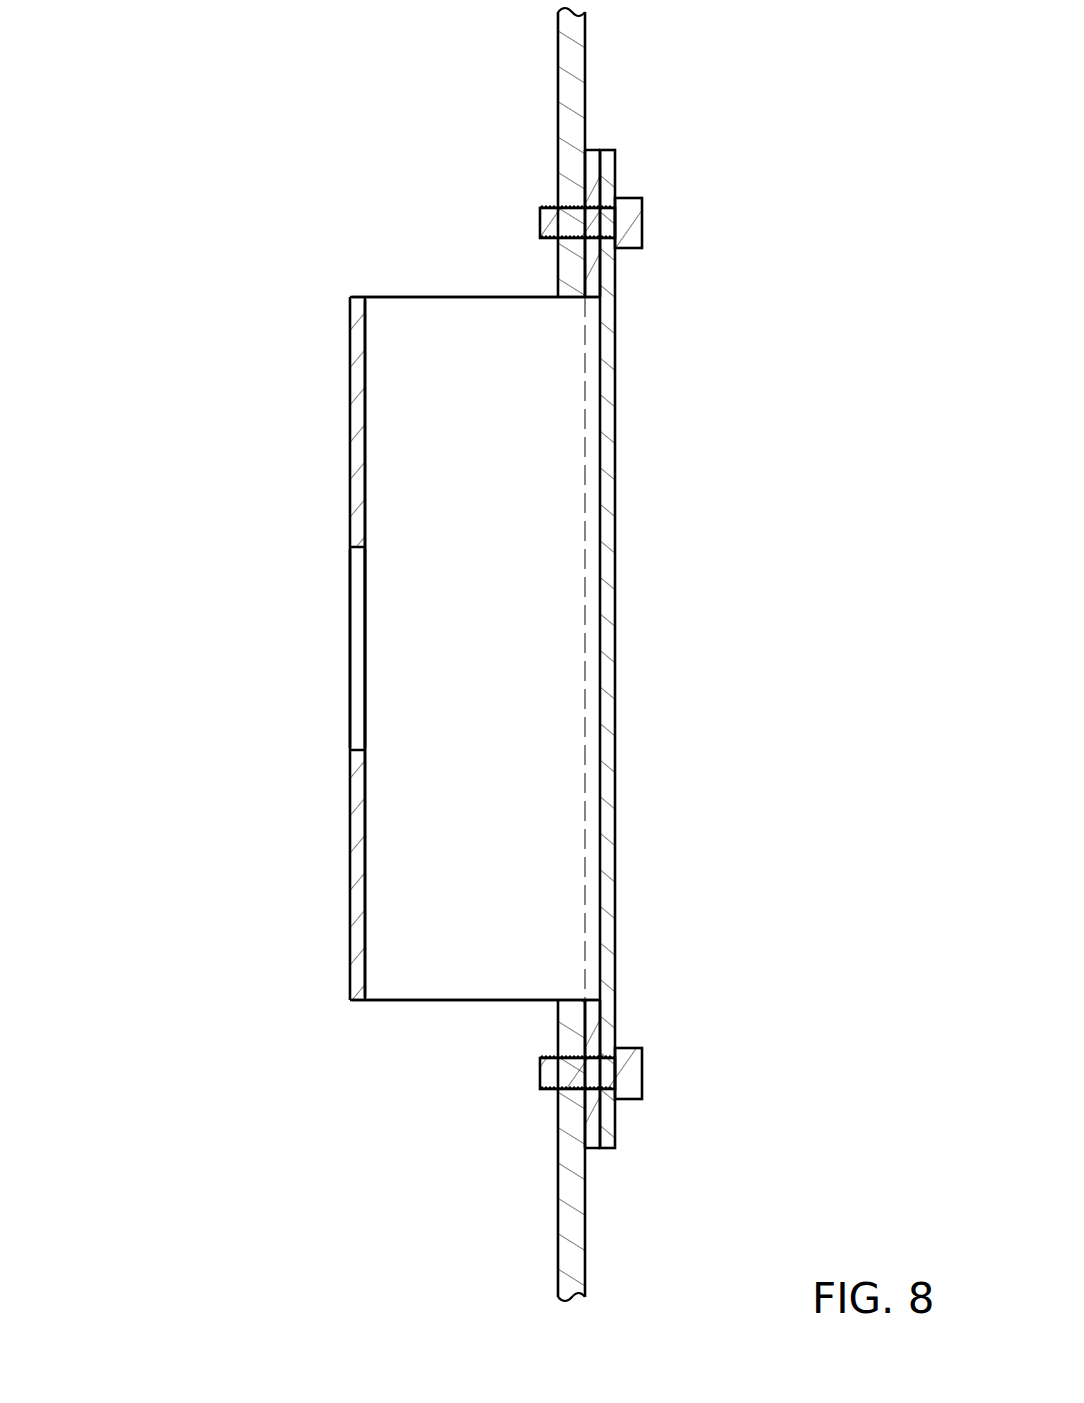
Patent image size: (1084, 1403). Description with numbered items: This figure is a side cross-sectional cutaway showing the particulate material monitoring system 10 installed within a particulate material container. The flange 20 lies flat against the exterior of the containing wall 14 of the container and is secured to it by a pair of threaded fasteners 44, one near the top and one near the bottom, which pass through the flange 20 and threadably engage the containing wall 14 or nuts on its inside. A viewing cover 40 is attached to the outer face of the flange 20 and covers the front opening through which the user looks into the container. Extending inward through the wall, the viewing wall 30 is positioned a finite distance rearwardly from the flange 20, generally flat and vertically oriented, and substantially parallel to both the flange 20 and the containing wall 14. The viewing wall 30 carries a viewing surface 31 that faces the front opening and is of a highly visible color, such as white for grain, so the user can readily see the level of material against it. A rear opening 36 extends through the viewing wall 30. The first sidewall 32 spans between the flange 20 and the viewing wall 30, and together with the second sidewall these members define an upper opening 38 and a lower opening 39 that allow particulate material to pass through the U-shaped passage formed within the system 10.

The particulate material monitoring system 10 is at (185, 143).
The containing wall 14 is at (585, 1222).
The flange 20 is at (593, 148).
The viewing wall 30 is at (350, 857).
The viewing surface 31 is at (365, 453).
The first sidewall 32 is at (472, 408).
The rear opening 36 is at (357, 640).
The upper opening 38 is at (407, 296).
The lower opening 39 is at (435, 1000).
The viewing cover 40 is at (615, 632).
The fasteners 44 is at (642, 221).